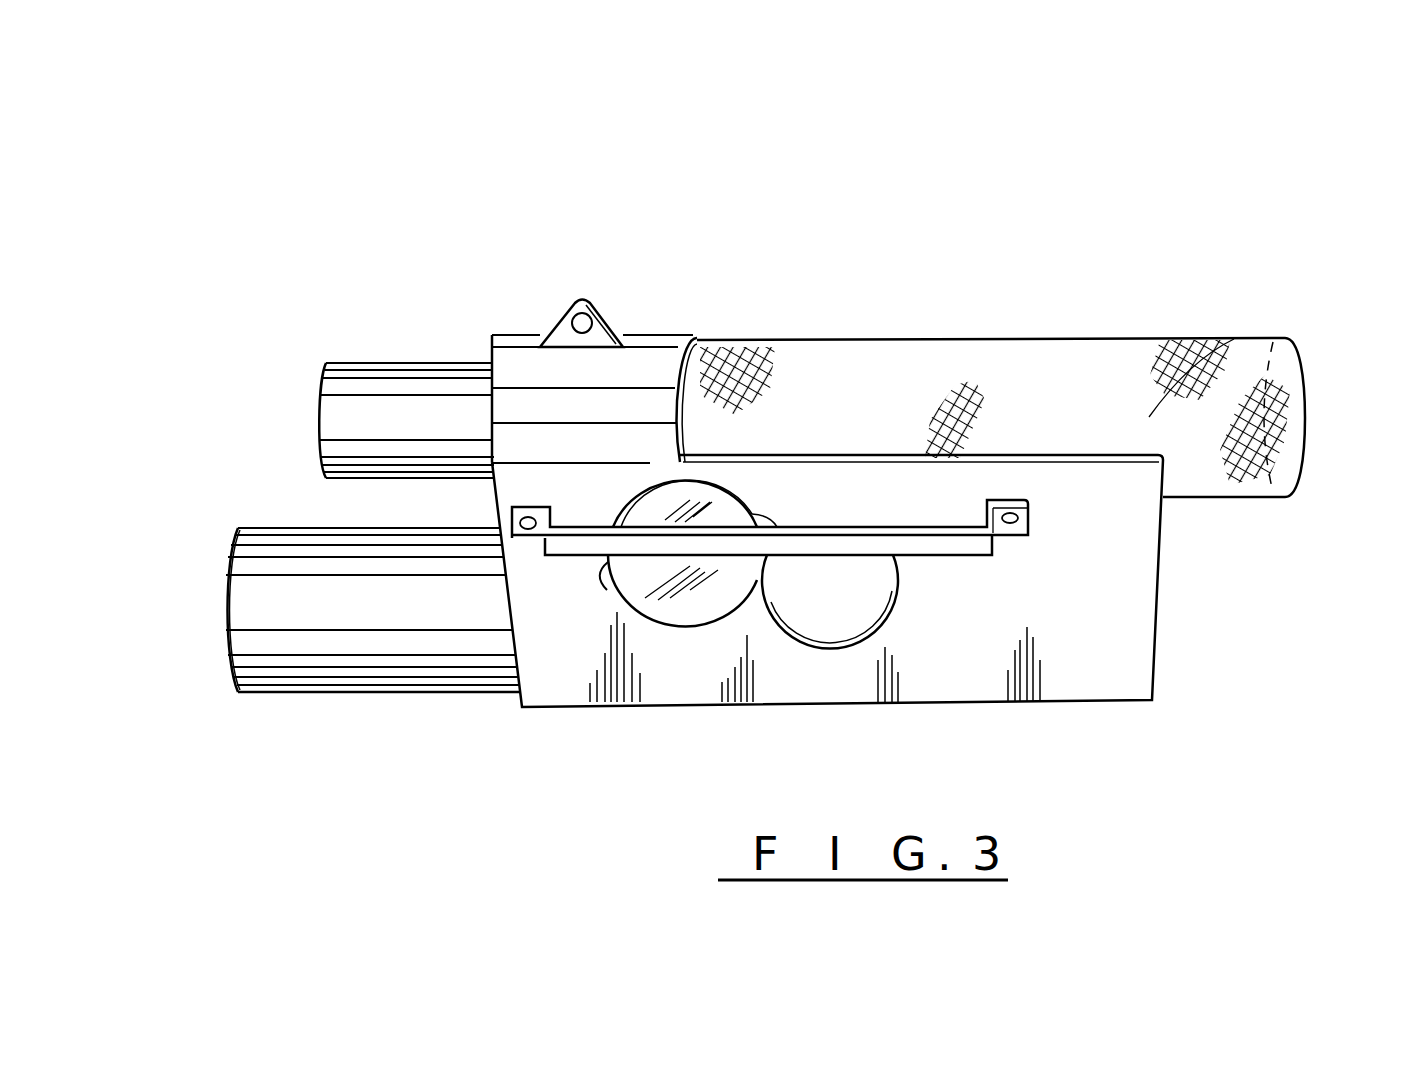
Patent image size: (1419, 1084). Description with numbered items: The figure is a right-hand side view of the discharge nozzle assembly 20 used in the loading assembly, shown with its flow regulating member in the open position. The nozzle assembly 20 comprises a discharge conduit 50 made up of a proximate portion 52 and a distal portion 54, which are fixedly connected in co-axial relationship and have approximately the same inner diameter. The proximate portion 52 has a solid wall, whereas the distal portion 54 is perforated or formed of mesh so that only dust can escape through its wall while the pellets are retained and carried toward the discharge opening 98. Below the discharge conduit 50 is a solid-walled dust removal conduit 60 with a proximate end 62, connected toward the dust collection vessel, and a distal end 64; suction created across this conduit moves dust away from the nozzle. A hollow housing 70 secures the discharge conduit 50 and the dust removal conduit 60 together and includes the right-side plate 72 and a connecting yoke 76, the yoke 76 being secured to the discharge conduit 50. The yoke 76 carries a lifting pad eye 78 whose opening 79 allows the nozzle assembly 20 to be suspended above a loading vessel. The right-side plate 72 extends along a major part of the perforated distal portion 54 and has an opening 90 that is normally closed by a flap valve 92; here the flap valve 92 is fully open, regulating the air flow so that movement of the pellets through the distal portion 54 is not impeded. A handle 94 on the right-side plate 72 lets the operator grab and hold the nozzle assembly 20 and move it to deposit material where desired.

The discharge nozzle assembly 20 is at (1097, 183).
The discharge conduit 50 is at (1188, 335).
The proximate portion 52 is at (415, 372).
The distal portion 54 is at (847, 357).
The dust removal conduit 60 is at (305, 650).
The proximate end 62 is at (225, 642).
The distal end 64 is at (513, 693).
The hollow housing 70 is at (1160, 600).
The right-side plate 72 is at (1127, 640).
The connecting yoke 76 is at (657, 357).
The lifting pad eye 78 is at (602, 310).
The opening 79 is at (565, 325).
The opening 90 is at (853, 596).
The flap valve 92 is at (694, 608).
The handle 94 is at (888, 525).
The discharge opening 98 is at (1306, 397).